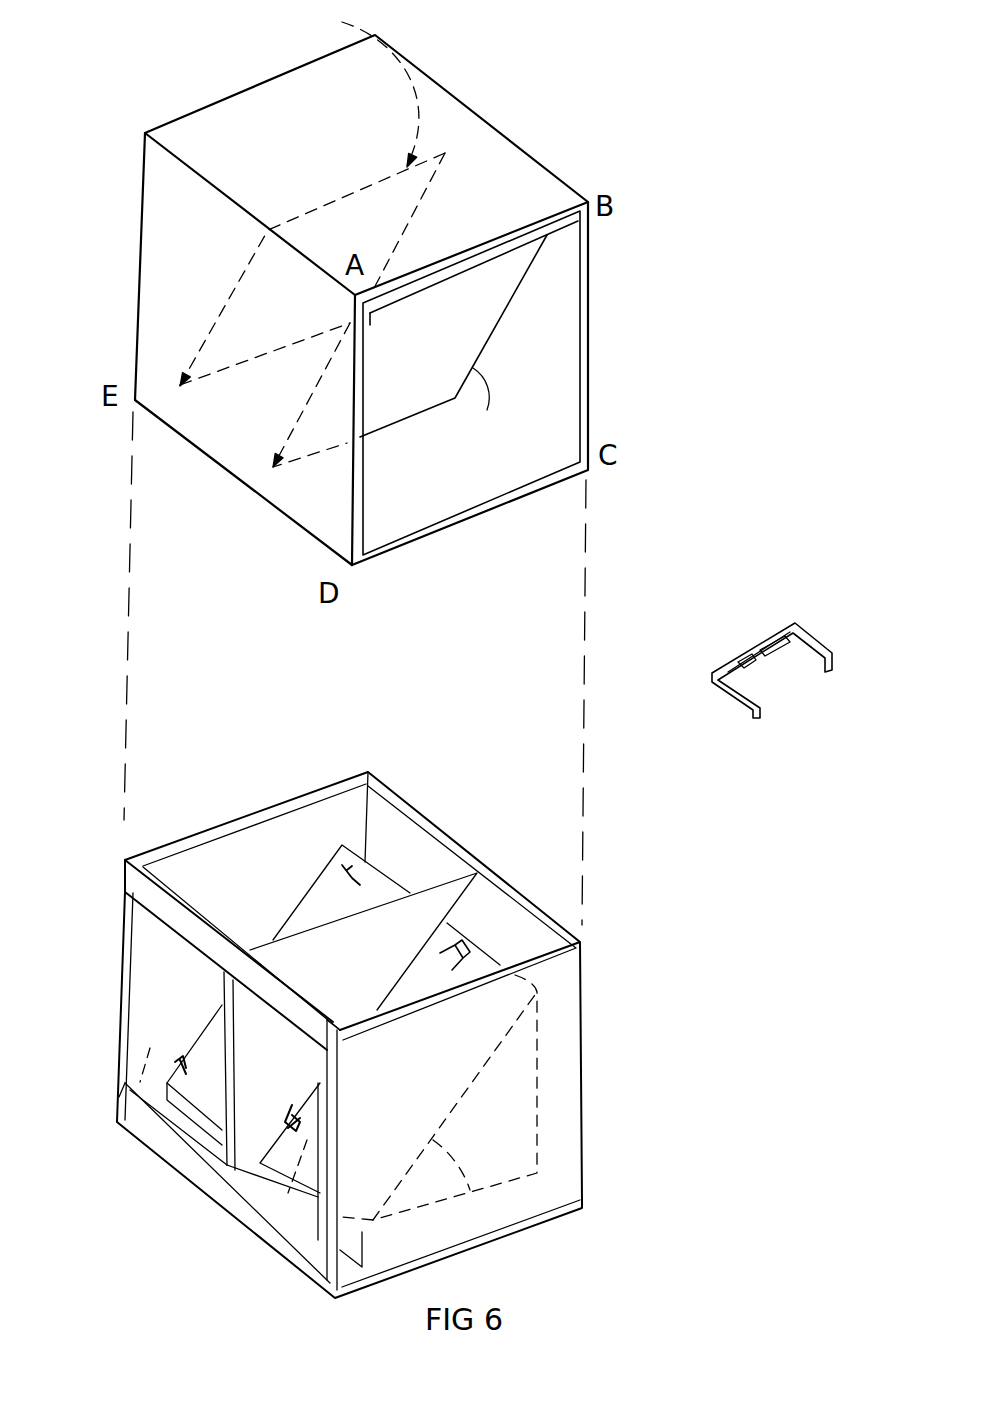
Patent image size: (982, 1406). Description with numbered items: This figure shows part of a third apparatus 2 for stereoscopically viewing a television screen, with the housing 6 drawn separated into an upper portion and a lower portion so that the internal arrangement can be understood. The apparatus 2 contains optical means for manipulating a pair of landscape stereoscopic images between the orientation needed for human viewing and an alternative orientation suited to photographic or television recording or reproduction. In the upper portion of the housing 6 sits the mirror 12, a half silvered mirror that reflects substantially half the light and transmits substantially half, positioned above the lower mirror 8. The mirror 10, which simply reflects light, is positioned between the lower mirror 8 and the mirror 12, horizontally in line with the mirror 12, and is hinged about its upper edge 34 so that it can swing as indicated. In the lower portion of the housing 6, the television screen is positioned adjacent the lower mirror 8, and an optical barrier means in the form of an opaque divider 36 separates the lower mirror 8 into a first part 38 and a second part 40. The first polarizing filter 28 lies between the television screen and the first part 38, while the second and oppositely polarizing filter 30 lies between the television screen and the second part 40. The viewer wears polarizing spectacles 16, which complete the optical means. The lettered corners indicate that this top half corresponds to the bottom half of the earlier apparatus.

The apparatus 2 is at (603, 260).
The housing 6 is at (583, 1002).
The lower mirror 8 is at (310, 878).
The mirror 10 is at (215, 318).
The mirror 12 is at (505, 296).
The polarizing spectacles 16 is at (750, 688).
The first polarizing filter 28 is at (112, 1125).
The second polarizing filter 30 is at (273, 1217).
The upper edge 34 is at (360, 84).
The opaque divider 36 is at (373, 907).
The first part 38 is at (197, 1050).
The second part 40 is at (433, 1103).